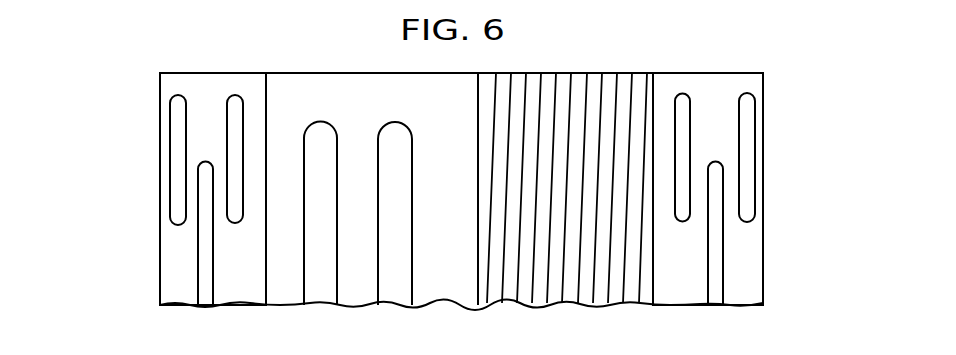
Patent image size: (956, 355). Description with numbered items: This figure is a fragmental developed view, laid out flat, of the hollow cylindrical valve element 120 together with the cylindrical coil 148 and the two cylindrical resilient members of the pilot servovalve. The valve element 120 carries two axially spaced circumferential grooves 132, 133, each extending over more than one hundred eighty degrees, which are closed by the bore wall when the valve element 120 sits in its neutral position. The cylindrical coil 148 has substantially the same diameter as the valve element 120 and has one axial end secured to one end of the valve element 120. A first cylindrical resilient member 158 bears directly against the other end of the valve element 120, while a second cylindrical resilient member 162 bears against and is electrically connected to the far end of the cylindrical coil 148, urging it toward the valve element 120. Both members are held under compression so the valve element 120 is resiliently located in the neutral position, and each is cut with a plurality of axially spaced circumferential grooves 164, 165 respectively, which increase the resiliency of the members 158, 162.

The hollow cylindrical valve element 120 is at (351, 70).
The first cylindrical resilient member 158 is at (203, 70).
The second cylindrical resilient member 162 is at (716, 70).
The circumferential grooves 164 is at (230, 120).
The circumferential grooves 165 is at (687, 117).
The circumferential groove 132 is at (305, 135).
The circumferential groove 133 is at (380, 135).
The cylindrical coil 148 is at (563, 82).